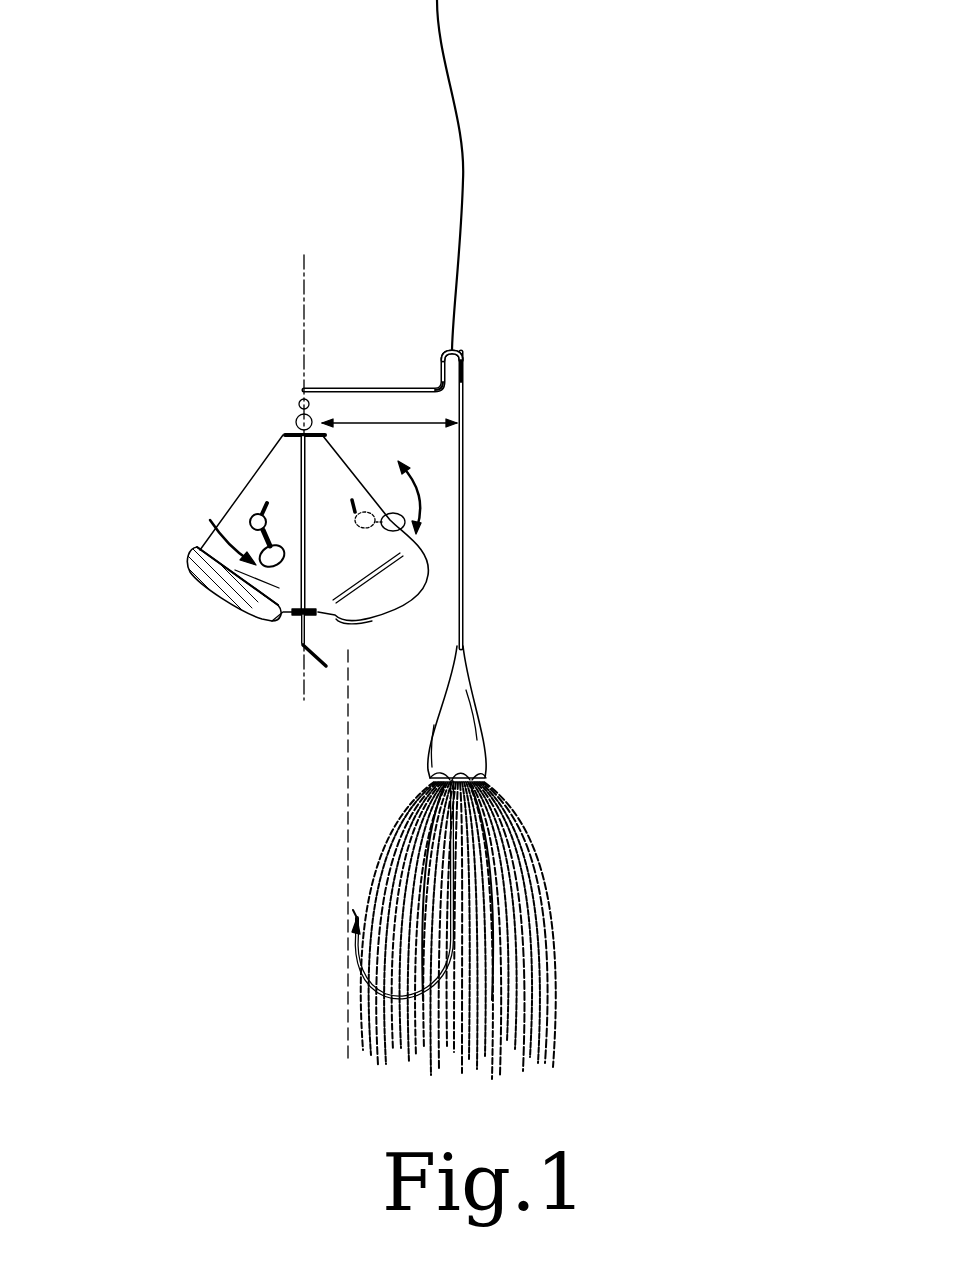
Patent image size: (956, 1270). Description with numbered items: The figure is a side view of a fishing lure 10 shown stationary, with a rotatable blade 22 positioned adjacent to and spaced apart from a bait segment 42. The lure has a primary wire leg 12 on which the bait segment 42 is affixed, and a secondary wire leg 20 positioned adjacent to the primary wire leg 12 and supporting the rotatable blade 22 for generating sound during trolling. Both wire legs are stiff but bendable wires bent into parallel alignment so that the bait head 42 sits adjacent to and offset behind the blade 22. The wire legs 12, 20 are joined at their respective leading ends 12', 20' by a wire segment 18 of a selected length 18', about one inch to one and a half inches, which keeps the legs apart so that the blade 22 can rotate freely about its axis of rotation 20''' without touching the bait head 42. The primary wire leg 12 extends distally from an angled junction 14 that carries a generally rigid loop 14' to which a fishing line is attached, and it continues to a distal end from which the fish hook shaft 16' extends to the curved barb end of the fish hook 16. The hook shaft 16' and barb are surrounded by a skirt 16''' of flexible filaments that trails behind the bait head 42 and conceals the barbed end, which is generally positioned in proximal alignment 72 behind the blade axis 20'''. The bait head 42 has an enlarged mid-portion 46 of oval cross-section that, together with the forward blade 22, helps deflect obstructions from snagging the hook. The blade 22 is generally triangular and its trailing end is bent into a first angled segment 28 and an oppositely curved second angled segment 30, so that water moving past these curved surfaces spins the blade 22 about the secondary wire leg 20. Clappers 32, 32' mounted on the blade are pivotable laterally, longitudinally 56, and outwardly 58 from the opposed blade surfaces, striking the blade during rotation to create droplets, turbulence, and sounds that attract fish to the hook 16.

The fishing lure 10 is at (185, 207).
The primary wire leg 12 is at (499, 500).
The first leading end of primary wire leg 12' is at (509, 364).
The angled junction 14 is at (489, 327).
The rigid loop 14' is at (411, 330).
The fish hook 16 is at (445, 930).
The fish hook shaft 16' is at (489, 890).
The skirt 16''' is at (513, 930).
The wire segment 18 is at (382, 328).
The selected length 18' is at (389, 375).
The secondary wire leg 20 is at (271, 514).
The leading end of secondary wire leg 20' is at (279, 382).
The axis of rotation 20''' is at (278, 667).
The rotatable blade 22 is at (251, 512).
The first angled segment 28 is at (386, 585).
The second angled segment 30 is at (212, 579).
The clapper 32 is at (226, 504).
The clapper 32' is at (378, 481).
The bait segment 42 is at (524, 713).
The enlarged mid-portion 46 is at (458, 740).
The longitudinal pivoting direction 56 is at (418, 478).
The outward pivoting direction 58 is at (228, 552).
The proximal alignment 72 is at (348, 765).